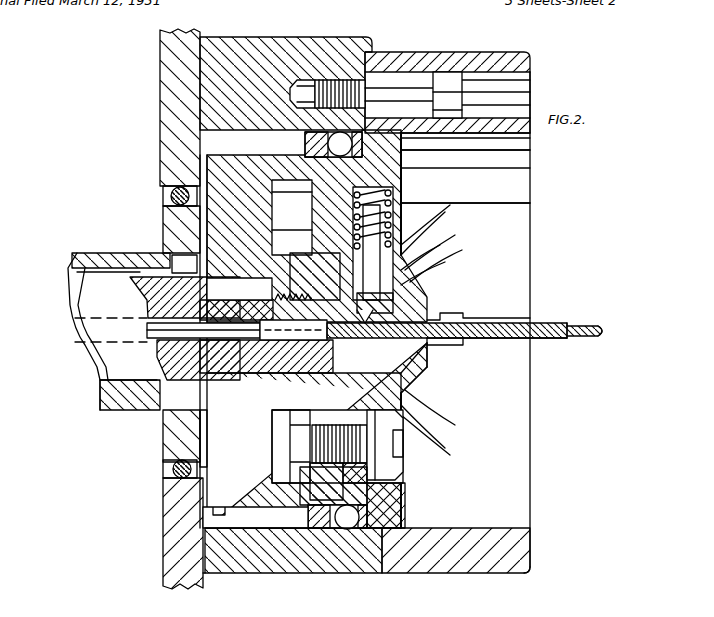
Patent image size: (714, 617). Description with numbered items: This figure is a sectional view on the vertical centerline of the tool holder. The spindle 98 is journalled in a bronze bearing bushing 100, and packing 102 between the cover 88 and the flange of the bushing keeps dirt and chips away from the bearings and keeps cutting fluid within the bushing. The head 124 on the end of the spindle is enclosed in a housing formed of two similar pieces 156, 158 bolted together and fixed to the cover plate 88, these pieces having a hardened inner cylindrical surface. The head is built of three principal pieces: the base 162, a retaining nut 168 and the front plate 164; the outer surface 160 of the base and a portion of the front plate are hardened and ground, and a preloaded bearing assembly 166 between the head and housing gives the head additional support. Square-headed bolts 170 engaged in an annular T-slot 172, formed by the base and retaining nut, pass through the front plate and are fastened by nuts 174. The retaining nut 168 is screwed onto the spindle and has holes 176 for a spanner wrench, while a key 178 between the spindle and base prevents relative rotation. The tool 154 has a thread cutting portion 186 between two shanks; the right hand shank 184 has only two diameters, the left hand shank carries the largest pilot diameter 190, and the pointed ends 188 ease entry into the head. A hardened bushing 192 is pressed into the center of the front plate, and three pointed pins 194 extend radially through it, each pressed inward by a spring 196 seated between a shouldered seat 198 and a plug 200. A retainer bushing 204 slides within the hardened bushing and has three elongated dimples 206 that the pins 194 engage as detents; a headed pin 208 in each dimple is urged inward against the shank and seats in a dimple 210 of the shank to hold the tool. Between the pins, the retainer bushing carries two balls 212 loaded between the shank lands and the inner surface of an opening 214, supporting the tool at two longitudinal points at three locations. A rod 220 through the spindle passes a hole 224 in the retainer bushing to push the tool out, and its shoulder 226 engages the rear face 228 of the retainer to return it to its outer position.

The cover 88 is at (180, 108).
The spindle 98 is at (98, 307).
The bearing bushing 100 is at (175, 423).
The packing 102 is at (237, 461).
The head 124 is at (420, 497).
The tool 154 is at (533, 318).
The housing piece 156 is at (282, 58).
The housing piece 158 is at (415, 58).
The outer surface 160 is at (240, 507).
The base 162 is at (163, 533).
The front plate 164 is at (400, 515).
The bearing assembly 166 is at (310, 132).
The retaining nut 168 is at (310, 223).
The square-headed bolts 170 is at (405, 452).
The annular T-slot 172 is at (280, 187).
The nuts 174 is at (400, 468).
The holes 176 is at (305, 252).
The key 178 is at (172, 257).
The shank 184 is at (440, 312).
The thread cutting portion 186 is at (462, 312).
The ends 188 is at (603, 335).
The pilot diameter 190 is at (437, 357).
The hardened bushing 192 is at (410, 393).
The pins 194 is at (420, 270).
The spring 196 is at (405, 196).
The shouldered seat 198 is at (403, 260).
The plug 200 is at (405, 157).
The retainer bushing 204 is at (430, 300).
The dimples 206 is at (410, 262).
The pin 208 is at (427, 285).
The dimple 210 is at (582, 322).
The balls 212 is at (430, 363).
The opening 214 is at (413, 367).
The rod 220 is at (170, 327).
The hole 224 is at (385, 410).
The shoulder 226 is at (287, 290).
The rear face 228 is at (157, 364).